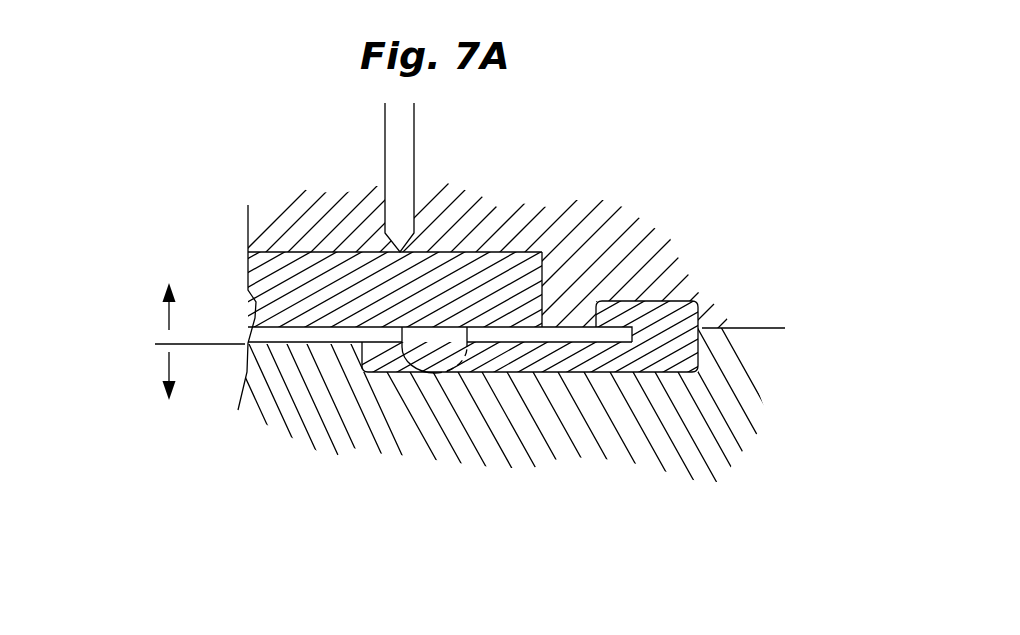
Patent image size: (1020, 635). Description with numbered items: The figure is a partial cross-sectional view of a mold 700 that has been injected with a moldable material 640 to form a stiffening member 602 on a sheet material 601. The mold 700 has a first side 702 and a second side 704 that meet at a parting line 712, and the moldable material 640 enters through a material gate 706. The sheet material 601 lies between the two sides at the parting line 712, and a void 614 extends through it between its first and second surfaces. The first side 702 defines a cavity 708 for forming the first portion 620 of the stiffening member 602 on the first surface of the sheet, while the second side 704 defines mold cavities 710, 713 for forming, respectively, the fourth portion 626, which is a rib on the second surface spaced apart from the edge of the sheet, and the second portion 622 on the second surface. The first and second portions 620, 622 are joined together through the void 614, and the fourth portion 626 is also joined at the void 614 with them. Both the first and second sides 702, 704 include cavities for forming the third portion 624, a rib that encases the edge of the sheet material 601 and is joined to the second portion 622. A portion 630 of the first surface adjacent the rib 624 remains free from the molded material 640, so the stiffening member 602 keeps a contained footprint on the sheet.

The mold 700 is at (247, 126).
The first side 702 is at (161, 294).
The second side 704 is at (151, 385).
The material gate 706 is at (416, 157).
The cavity 708 is at (338, 262).
The moldable material 640 is at (297, 275).
The first portion 620 is at (530, 275).
The void 614 is at (446, 330).
The portion of the first surface 630 is at (576, 316).
The third portion 624 is at (657, 292).
The second portion 622 is at (578, 385).
The stiffening member 602 is at (678, 398).
The sheet material 601 is at (318, 344).
The mold cavity 710 is at (412, 348).
The fourth portion 626 is at (421, 375).
The mold cavity 713 is at (490, 374).
The parting line 712 is at (139, 300).